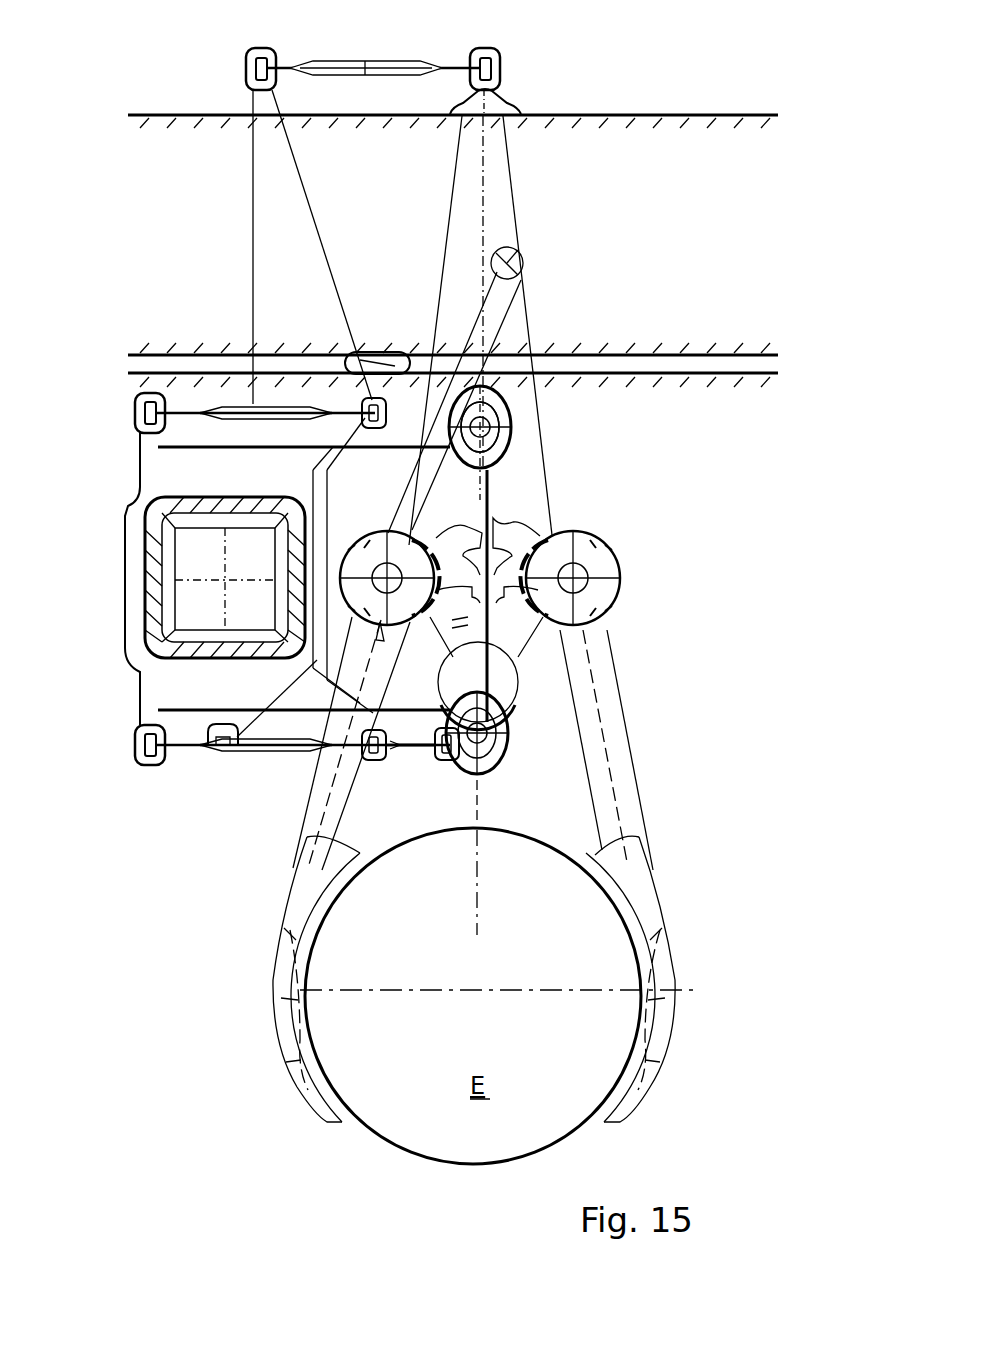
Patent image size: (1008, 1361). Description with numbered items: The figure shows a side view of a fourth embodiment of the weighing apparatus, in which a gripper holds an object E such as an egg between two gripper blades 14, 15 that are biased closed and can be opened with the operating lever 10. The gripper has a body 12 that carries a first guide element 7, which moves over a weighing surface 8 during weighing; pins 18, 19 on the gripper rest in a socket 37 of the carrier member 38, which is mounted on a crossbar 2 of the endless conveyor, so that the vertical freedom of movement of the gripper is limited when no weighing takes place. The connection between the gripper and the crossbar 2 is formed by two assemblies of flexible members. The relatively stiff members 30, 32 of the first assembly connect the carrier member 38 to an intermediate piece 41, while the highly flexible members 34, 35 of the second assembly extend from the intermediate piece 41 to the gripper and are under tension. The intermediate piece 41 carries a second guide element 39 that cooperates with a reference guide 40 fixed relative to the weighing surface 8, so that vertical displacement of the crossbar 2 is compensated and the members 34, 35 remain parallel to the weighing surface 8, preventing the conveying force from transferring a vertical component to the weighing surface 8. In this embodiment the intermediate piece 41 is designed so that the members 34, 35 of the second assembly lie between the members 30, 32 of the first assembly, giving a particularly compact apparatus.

The crossbar 2 is at (165, 598).
The first guide element 7 is at (501, 103).
The weighing surface 8 is at (651, 114).
The operating lever 10 is at (524, 268).
The body portion 12 is at (510, 222).
The gripper blade 14 is at (664, 1004).
The gripper blade 15 is at (290, 1013).
The projection 18 is at (484, 736).
The projection 19 is at (490, 425).
The flexible member of first assembly 30 is at (272, 760).
The flexible member of first assembly 32 is at (231, 406).
The flexible member of second assembly 34 is at (394, 67).
The flexible member of second assembly 35 is at (398, 752).
The socket 37 is at (502, 448).
The carrier member 38 is at (460, 500).
The second guide element 39 is at (409, 352).
The reference guide 40 is at (633, 375).
The intermediate piece 41 is at (285, 245).